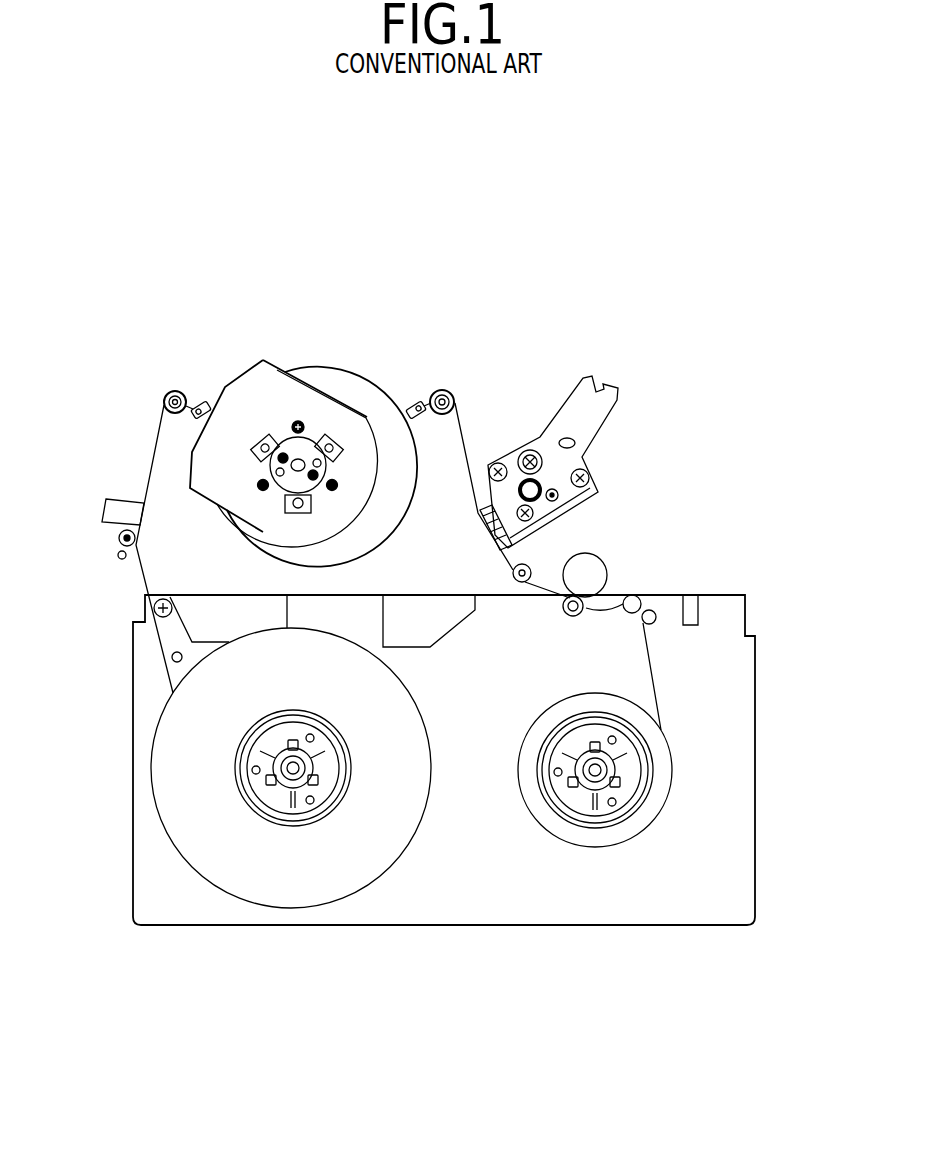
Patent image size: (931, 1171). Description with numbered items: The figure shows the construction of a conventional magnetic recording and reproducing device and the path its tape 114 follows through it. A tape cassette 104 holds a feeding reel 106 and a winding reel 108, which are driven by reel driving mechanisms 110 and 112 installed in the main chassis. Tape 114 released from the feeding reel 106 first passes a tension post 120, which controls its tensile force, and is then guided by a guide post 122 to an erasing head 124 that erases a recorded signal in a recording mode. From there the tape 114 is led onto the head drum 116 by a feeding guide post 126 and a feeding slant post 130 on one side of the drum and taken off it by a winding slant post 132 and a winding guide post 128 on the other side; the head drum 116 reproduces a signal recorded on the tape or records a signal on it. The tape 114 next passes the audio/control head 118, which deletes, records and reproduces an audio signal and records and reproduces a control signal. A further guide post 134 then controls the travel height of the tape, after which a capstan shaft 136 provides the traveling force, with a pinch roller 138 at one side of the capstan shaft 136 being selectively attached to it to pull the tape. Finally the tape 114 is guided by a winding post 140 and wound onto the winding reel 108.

The tape cassette 104 is at (150, 845).
The feeding reel 106 is at (313, 827).
The winding reel 108 is at (634, 813).
The reel driving mechanism 110 is at (237, 760).
The reel driving mechanism 112 is at (597, 790).
The tape 114 is at (141, 576).
The head drum 116 is at (357, 370).
The audio/control head 118 is at (480, 517).
The tension post 120 is at (118, 556).
The guide post 122 is at (119, 537).
The erasing head 124 is at (118, 505).
The feeding guide post 126 is at (164, 398).
The winding guide post 128 is at (455, 403).
The feeding slant post 130 is at (203, 404).
The winding slant post 132 is at (411, 403).
The guide post 134 is at (534, 566).
The capstan shaft 136 is at (590, 606).
The pinch roller 138 is at (606, 560).
The winding post 140 is at (652, 623).